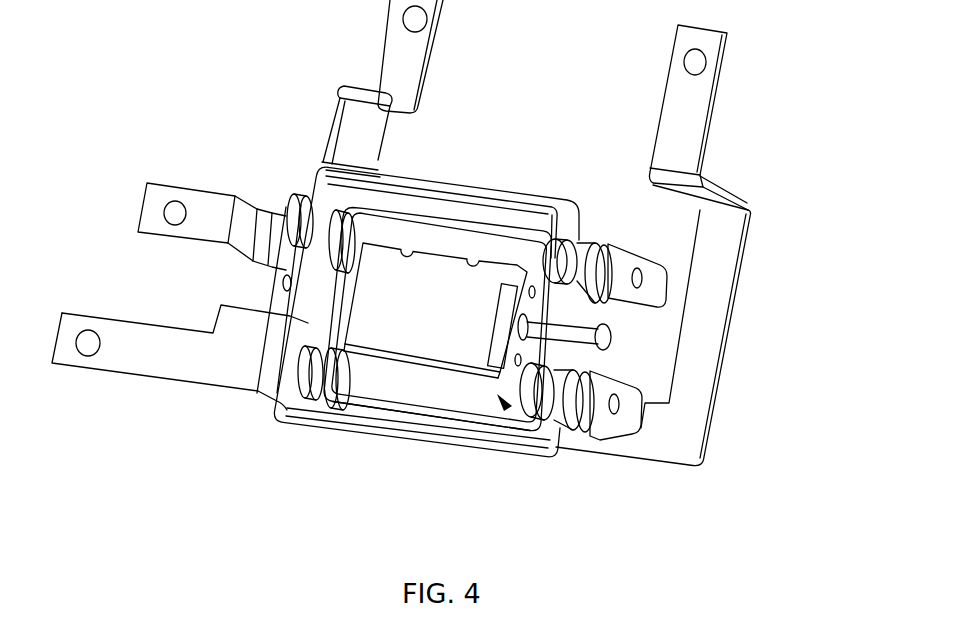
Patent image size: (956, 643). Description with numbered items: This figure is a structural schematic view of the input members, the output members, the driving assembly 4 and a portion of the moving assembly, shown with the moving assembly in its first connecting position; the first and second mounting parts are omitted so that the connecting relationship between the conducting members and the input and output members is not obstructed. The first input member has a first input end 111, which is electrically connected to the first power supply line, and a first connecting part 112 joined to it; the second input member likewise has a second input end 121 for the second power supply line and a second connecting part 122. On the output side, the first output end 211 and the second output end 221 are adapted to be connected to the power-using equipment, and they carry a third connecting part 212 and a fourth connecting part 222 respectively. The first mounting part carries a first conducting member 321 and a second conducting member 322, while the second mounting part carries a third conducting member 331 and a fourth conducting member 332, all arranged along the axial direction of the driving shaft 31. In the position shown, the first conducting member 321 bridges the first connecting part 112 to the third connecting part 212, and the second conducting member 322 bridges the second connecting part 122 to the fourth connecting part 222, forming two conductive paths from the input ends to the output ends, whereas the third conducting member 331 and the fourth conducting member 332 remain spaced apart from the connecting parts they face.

The first input end 111 is at (352, 112).
The first connecting part 112 is at (493, 193).
The second input end 121 is at (720, 267).
The second connecting part 122 is at (440, 425).
The first output end 211 is at (200, 360).
The third connecting part 212 is at (360, 430).
The second output end 221 is at (240, 213).
The fourth connecting part 222 is at (467, 213).
The first conducting member 321 is at (280, 298).
The second conducting member 322 is at (323, 318).
The third conducting member 331 is at (647, 288).
The fourth conducting member 332 is at (625, 412).
The driving shaft 31 is at (563, 338).
The driving assembly 4 is at (503, 403).